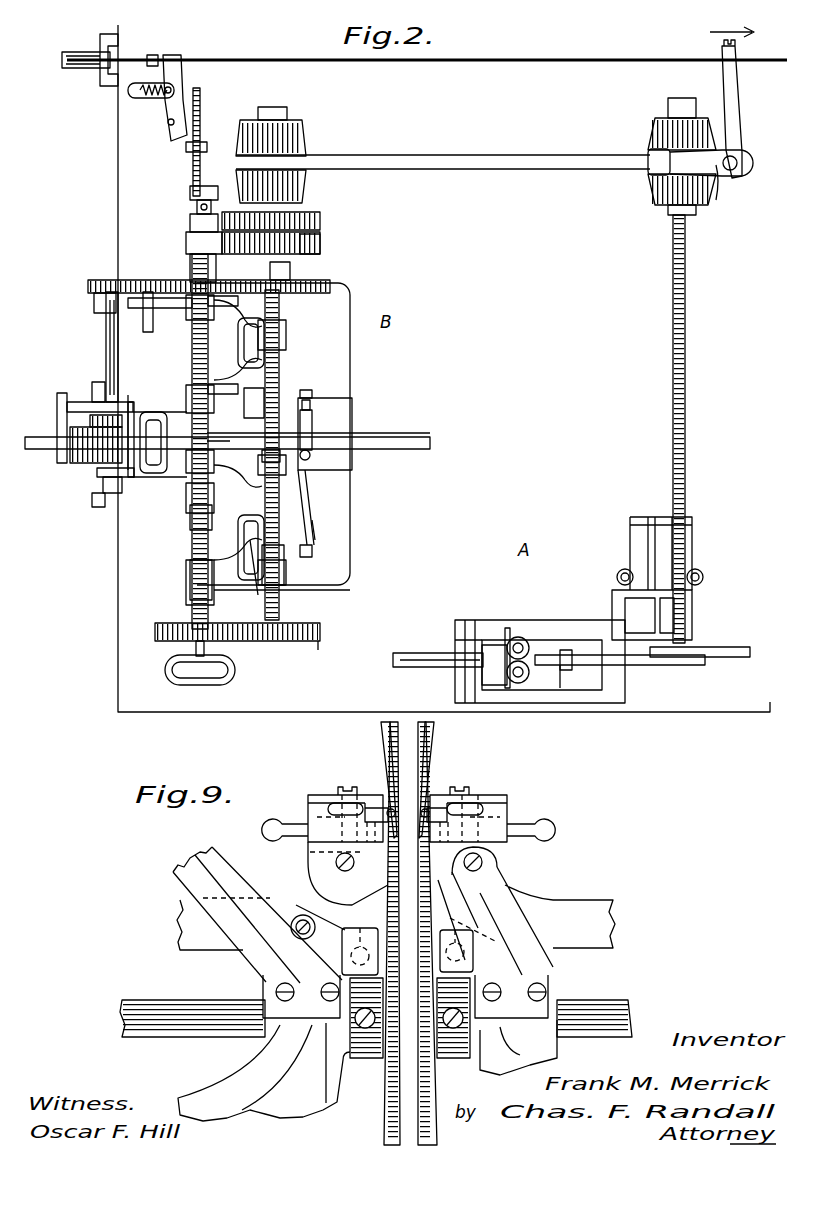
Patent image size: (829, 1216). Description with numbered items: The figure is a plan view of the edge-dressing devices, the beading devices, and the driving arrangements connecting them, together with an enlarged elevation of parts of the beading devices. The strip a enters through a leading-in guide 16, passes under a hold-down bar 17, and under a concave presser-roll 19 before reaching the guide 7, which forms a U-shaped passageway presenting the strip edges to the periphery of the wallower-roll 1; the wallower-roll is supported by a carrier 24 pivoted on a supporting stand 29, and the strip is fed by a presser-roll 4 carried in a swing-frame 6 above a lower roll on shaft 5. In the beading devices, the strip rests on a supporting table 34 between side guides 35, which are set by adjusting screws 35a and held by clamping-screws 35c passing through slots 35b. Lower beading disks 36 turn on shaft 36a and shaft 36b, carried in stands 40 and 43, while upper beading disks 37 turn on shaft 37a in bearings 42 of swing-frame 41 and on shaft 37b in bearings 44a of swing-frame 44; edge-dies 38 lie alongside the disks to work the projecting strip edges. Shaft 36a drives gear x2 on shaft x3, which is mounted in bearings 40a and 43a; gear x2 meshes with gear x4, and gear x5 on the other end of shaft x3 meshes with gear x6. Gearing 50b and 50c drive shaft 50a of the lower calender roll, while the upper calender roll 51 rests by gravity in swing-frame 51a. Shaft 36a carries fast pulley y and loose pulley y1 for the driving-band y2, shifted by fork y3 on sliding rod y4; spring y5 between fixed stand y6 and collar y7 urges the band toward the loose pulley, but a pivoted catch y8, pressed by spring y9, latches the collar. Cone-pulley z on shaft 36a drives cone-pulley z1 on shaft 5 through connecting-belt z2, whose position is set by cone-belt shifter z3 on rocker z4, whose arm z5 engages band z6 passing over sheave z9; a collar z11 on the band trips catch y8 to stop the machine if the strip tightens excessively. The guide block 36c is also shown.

In FIG. 2, the roll or sheave z9 is at (65, 60).
In FIG. 2, the collar z11 is at (152, 54).
In FIG. 2, the sliding rod y4 is at (203, 100).
In FIG. 2, the band z6 is at (538, 62).
In FIG. 2, the arm z5 is at (740, 88).
In FIG. 2, the cone-pulley z is at (304, 136).
In FIG. 2, the connecting-belt z2 is at (498, 156).
In FIG. 2, the cone-pulley z1 is at (661, 156).
In FIG. 2, the rocker z4 is at (738, 166).
In FIG. 2, the cone-belt shifter z3 is at (718, 178).
In FIG. 2, the spring y9 is at (140, 100).
In FIG. 2, the pivoted catch y8 is at (168, 118).
In FIG. 2, the collar y7 is at (185, 147).
In FIG. 2, the spring y5 is at (192, 160).
In FIG. 2, the fixed stand y6 is at (190, 190).
In FIG. 2, the shifter-fork y3 is at (197, 207).
In FIG. 2, the loose pulley y1 is at (320, 220).
In FIG. 2, the fast pulley y is at (320, 242).
In FIG. 2, the driving-band y2 is at (320, 250).
In FIG. 2, the gearing 50c is at (138, 280).
In FIG. 2, the gear x2 is at (168, 280).
In FIG. 2, the shaft 36a is at (272, 266).
In FIG. 9, the shaft 36a is at (598, 1000).
In FIG. 2, the gear x4 is at (320, 282).
In FIG. 2, the gearing 50b is at (90, 286).
In FIG. 2, the stand 40 is at (345, 308).
In FIG. 9, the stand 40 is at (560, 900).
In FIG. 2, the bearings 42 is at (270, 302).
In FIG. 2, the bearings 40a is at (186, 318).
In FIG. 2, the swing-frame 51a is at (128, 395).
In FIG. 2, the shaft 50a is at (104, 358).
In FIG. 2, the swing-frame 41 is at (218, 356).
In FIG. 2, the shaft 37a is at (278, 336).
In FIG. 2, the adjusting screws 35a is at (306, 396).
In FIG. 2, the clamping-screws 35c is at (314, 386).
In FIG. 2, the supporting table 34 is at (340, 392).
In FIG. 2, the side guides 35 is at (312, 420).
In FIG. 2, the upper beading disks 37 is at (330, 432).
In FIG. 9, the upper beading disks 37 is at (388, 748).
In FIG. 2, the strip a is at (30, 436).
In FIG. 9, the strip a is at (407, 812).
In FIG. 2, the upper calender roll 51 is at (70, 460).
In FIG. 2, the guide block 36c is at (262, 462).
In FIG. 2, the supporting shaft x3 is at (188, 482).
In FIG. 2, the bearings 43a is at (186, 520).
In FIG. 2, the swing-frame 44 is at (236, 568).
In FIG. 2, the bearings 44a is at (262, 546).
In FIG. 2, the shaft 37b is at (252, 542).
In FIG. 2, the slot 35b is at (316, 526).
In FIG. 2, the stand 43 is at (352, 566).
In FIG. 9, the stand 43 is at (230, 1078).
In FIG. 2, the gear x5 is at (155, 628).
In FIG. 2, the gear x6 is at (304, 641).
In FIG. 2, the shaft 5 is at (672, 364).
In FIG. 2, the supporting stand 29 is at (632, 522).
In FIG. 2, the swing-frame 6 is at (650, 590).
In FIG. 2, the carrier 24 is at (492, 620).
In FIG. 2, the presser-roll 19 is at (520, 636).
In FIG. 2, the guide 7 is at (560, 656).
In FIG. 2, the leading-in guide 16 is at (420, 656).
In FIG. 2, the hold-down bar 17 is at (480, 660).
In FIG. 2, the wallower-roll 1 is at (578, 680).
In FIG. 2, the presser-roll 4 is at (708, 650).
In FIG. 9, the lower beading disks 36 is at (384, 1112).
In FIG. 9, the edge-dies 38 is at (380, 812).
In FIG. 9, the shaft 36b is at (186, 1012).